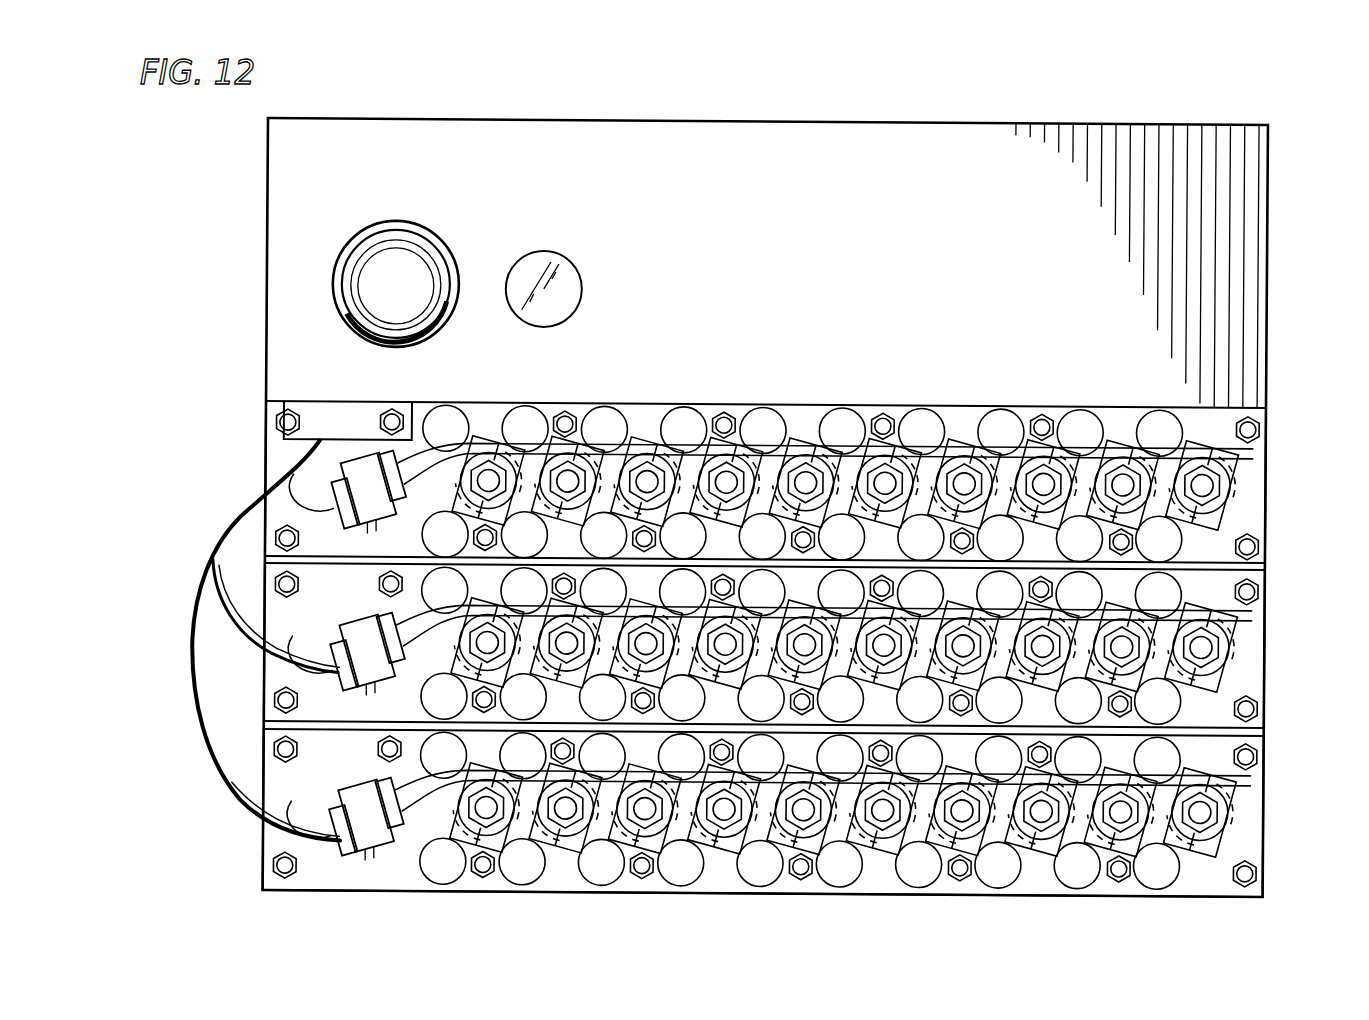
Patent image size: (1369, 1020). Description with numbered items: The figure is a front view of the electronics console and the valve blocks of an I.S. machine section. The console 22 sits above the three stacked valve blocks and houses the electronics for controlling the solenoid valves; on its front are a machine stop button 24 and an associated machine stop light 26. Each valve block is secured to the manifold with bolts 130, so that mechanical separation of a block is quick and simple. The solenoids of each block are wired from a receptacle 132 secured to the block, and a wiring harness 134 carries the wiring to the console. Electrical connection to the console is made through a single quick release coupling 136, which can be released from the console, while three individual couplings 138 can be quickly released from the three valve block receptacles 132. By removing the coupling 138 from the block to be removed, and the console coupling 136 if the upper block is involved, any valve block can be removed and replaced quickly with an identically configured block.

The console 22 is at (858, 275).
The machine stop button 24 is at (397, 275).
The machine stop light 26 is at (568, 272).
The bolts 130 is at (882, 416).
The receptacle 132 is at (409, 830).
The wiring harness 134 is at (234, 527).
The quick release coupling 136 is at (330, 428).
The individual couplings 138 is at (356, 849).